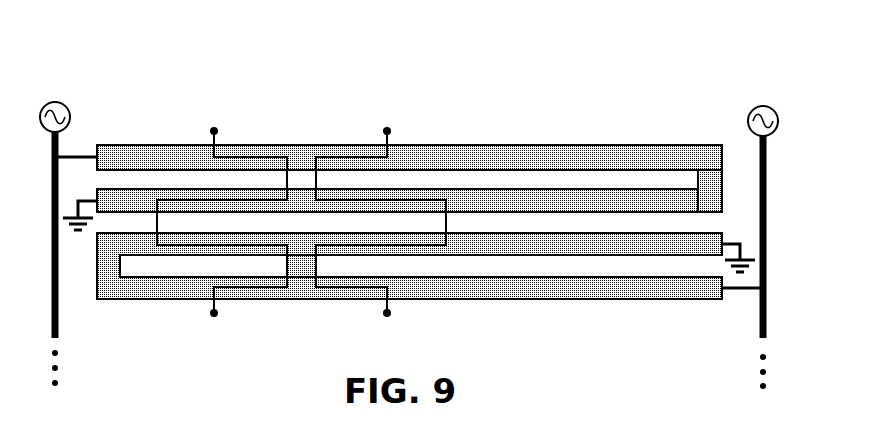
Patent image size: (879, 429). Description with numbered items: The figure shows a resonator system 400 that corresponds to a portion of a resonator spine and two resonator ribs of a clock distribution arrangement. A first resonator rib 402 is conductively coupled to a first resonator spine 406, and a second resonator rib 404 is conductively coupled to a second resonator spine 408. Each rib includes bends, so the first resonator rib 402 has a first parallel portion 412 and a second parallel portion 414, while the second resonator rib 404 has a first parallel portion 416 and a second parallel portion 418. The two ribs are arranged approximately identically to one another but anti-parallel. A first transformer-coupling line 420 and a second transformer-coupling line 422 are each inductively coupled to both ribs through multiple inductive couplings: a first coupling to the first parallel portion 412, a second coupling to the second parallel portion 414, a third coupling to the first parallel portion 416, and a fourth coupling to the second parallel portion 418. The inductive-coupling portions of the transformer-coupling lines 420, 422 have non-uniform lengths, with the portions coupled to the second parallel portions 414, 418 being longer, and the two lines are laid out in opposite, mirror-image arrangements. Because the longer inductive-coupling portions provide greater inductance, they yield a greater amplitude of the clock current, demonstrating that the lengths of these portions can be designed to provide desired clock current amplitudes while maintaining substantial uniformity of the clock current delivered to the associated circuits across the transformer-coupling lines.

The resonator system 400 is at (108, 60).
The first resonator rib 402 is at (476, 128).
The second resonator rib 404 is at (540, 314).
The first resonator spine 406 is at (58, 308).
The second resonator spine 408 is at (762, 316).
The first parallel portion 412 is at (577, 145).
The second parallel portion 414 is at (577, 190).
The first parallel portion 416 is at (577, 277).
The second parallel portion 418 is at (577, 233).
The first transformer-coupling line 420 is at (242, 120).
The second transformer-coupling line 422 is at (358, 122).